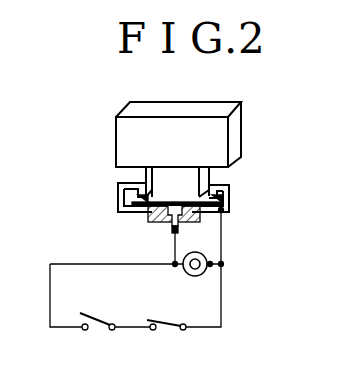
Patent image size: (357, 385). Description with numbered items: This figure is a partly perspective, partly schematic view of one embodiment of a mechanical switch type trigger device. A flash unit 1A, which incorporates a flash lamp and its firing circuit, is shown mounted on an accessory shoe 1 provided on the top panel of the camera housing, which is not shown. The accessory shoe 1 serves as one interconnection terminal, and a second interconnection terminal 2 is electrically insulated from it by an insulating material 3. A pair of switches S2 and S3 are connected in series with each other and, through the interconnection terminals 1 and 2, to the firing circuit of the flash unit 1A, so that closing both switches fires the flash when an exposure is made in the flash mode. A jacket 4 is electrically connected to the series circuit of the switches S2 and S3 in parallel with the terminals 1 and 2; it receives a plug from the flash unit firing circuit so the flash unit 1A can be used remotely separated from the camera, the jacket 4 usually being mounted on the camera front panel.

The flash unit 1A is at (241, 137).
The accessory shoe 1 is at (229, 198).
The interconnection terminal 2 is at (178, 233).
The insulating material 3 is at (155, 222).
The jacket 4 is at (210, 264).
The switch S2 is at (97, 334).
The switch S3 is at (166, 338).